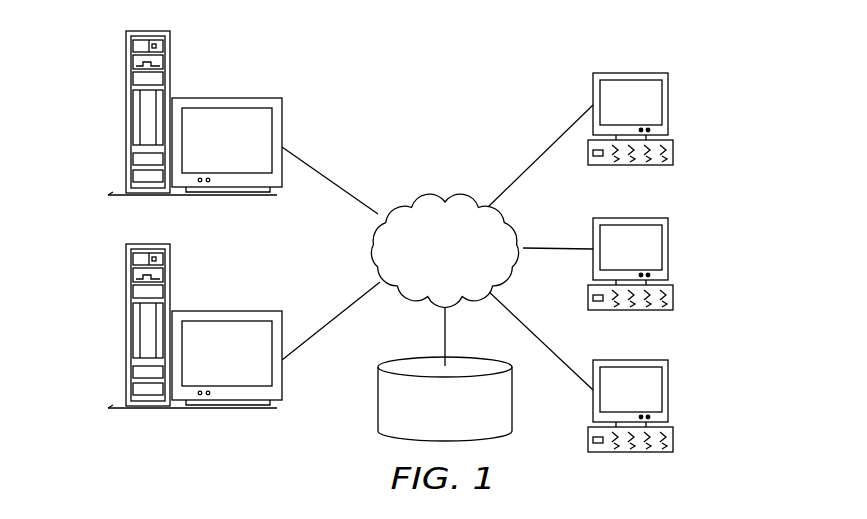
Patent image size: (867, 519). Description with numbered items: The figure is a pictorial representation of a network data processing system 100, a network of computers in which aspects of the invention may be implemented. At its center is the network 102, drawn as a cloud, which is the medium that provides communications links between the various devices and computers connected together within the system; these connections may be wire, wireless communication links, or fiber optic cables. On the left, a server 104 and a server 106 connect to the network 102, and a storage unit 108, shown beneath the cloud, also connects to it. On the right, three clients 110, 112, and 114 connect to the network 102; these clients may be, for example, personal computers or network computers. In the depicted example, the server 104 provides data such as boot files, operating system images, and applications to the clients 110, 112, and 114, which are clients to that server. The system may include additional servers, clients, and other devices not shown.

The network data processing system 100 is at (496, 86).
The network 102 is at (414, 202).
The server 104 is at (127, 113).
The server 106 is at (127, 328).
The storage unit 108 is at (377, 409).
The client 110 is at (668, 104).
The client 112 is at (668, 244).
The client 114 is at (668, 390).